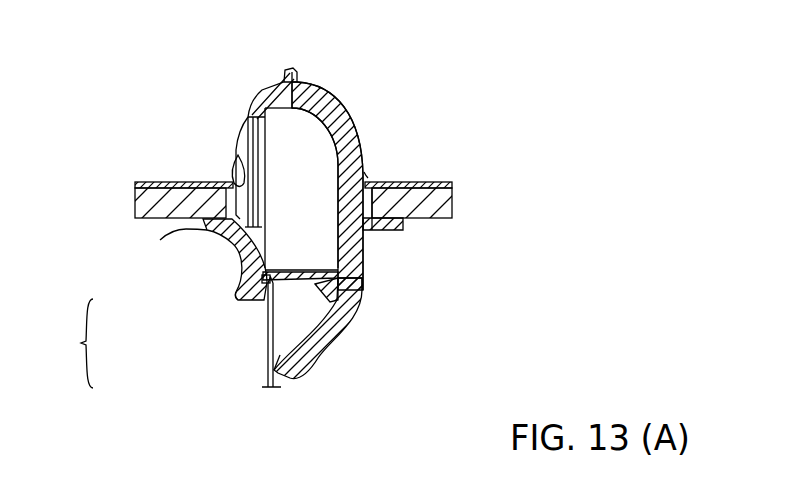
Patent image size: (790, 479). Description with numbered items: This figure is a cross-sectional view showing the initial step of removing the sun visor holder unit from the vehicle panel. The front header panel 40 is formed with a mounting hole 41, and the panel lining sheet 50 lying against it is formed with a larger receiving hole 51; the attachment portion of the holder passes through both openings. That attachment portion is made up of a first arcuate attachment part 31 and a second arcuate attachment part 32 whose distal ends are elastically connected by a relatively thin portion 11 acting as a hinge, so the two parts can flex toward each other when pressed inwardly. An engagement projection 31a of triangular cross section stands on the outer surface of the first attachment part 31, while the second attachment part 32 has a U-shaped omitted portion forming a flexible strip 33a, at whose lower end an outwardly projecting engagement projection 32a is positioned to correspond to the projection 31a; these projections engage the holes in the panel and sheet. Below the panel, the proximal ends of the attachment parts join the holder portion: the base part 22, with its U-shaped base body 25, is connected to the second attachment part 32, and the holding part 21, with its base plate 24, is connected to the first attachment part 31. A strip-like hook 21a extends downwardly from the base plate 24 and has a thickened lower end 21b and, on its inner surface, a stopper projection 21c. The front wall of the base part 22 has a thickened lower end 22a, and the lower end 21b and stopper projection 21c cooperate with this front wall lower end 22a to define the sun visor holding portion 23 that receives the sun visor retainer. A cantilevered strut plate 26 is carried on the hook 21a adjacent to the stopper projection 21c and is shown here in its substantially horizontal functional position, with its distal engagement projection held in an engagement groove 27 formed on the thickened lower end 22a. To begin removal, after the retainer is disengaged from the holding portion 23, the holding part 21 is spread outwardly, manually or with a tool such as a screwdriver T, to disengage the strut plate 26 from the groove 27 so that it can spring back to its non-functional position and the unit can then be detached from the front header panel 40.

The thin portion 11 is at (292, 70).
The holding part 21 is at (363, 273).
The hook 21a is at (335, 327).
The thickened lower end 21b is at (262, 352).
The stopper projection 21c is at (290, 318).
The base part 22 is at (237, 250).
The thickened lower end of front wall 22a is at (265, 307).
The sun visor holding portion 23 is at (68, 343).
The base plate 24 is at (403, 232).
The base body 25 is at (172, 231).
The strut plate 26 is at (315, 287).
The engagement groove 27 is at (237, 283).
The first arcuate attachment part 31 is at (350, 138).
The engagement projection 31a is at (373, 173).
The second arcuate attachment part 32 is at (257, 95).
The engagement projection 32a is at (231, 170).
The flexible strip 33a is at (240, 150).
The front header panel 40 is at (162, 183).
The mounting hole 41 is at (237, 160).
The panel lining sheet 50 is at (143, 197).
The receiving hole 51 is at (230, 200).
The needle T is at (262, 365).